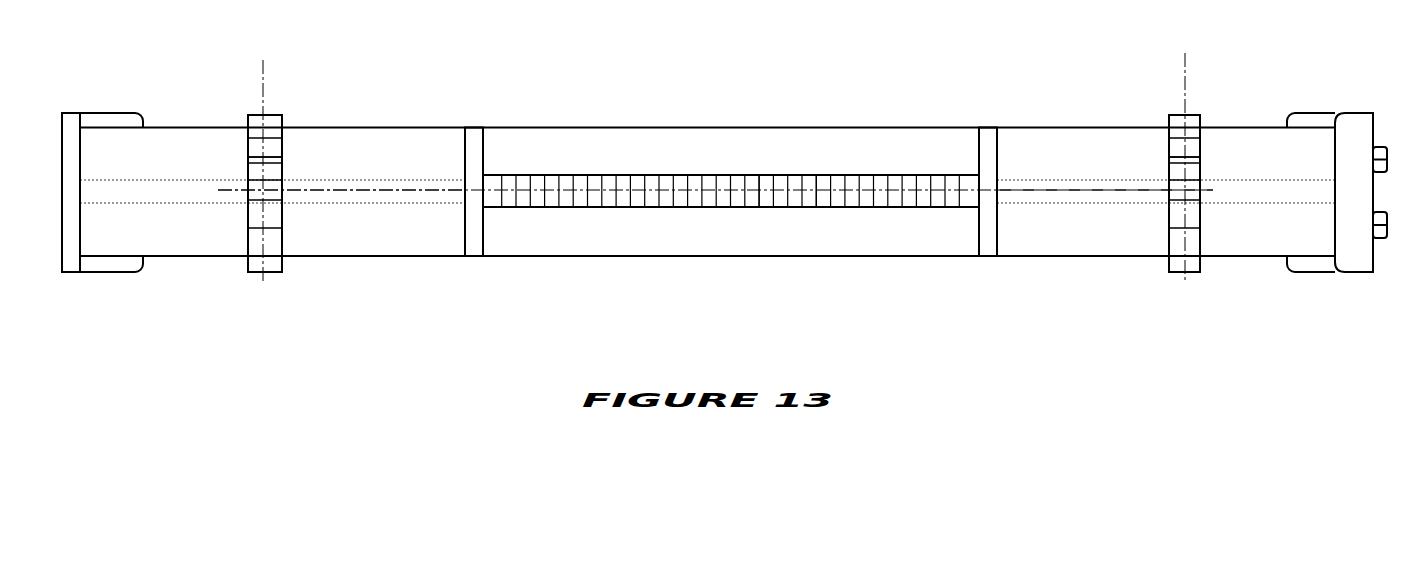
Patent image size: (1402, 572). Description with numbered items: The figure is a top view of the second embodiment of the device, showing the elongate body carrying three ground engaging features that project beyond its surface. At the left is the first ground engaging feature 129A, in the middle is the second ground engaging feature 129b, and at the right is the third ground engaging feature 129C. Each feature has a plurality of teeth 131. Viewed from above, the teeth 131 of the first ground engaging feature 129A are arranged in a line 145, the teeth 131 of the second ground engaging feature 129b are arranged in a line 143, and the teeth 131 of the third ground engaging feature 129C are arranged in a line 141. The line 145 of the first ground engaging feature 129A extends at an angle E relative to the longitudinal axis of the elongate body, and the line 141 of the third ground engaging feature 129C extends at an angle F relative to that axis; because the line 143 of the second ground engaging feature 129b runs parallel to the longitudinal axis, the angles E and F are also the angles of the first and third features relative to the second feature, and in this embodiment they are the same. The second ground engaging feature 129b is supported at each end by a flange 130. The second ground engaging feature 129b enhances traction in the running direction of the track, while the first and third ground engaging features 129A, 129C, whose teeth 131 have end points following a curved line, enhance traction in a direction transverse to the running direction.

The first ground engaging feature 129A is at (282, 232).
The second ground engaging feature 129b is at (622, 207).
The third ground engaging feature 129C is at (1167, 240).
The flange 130 is at (477, 140).
The teeth 131 is at (253, 163).
The line 141 is at (1185, 68).
The line 143 is at (1038, 188).
The line 145 is at (263, 72).
The angle E is at (343, 187).
The angle F is at (1107, 190).